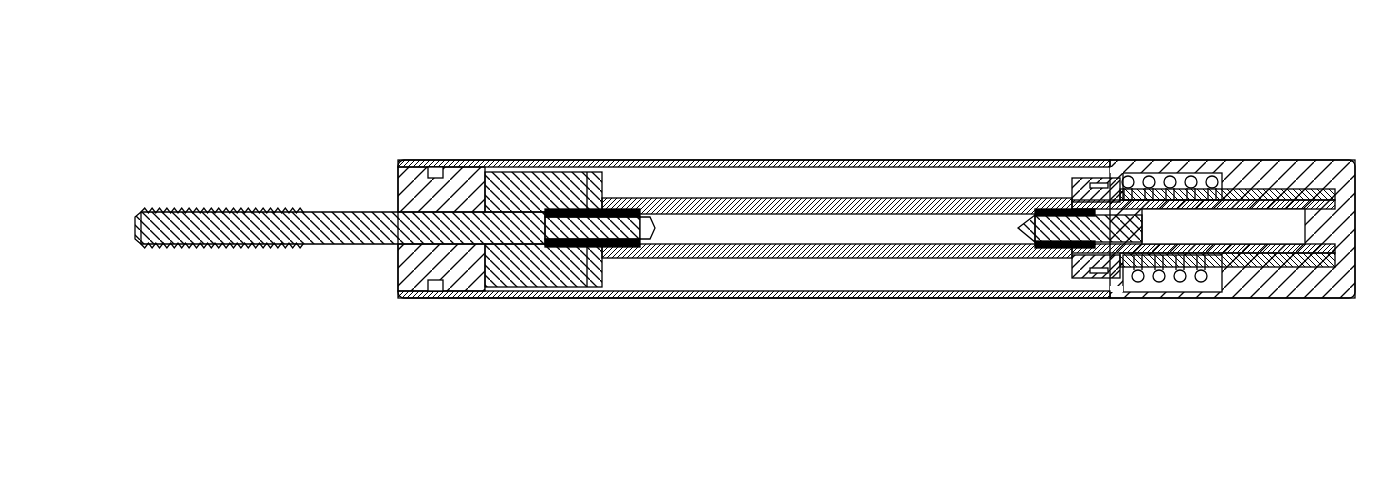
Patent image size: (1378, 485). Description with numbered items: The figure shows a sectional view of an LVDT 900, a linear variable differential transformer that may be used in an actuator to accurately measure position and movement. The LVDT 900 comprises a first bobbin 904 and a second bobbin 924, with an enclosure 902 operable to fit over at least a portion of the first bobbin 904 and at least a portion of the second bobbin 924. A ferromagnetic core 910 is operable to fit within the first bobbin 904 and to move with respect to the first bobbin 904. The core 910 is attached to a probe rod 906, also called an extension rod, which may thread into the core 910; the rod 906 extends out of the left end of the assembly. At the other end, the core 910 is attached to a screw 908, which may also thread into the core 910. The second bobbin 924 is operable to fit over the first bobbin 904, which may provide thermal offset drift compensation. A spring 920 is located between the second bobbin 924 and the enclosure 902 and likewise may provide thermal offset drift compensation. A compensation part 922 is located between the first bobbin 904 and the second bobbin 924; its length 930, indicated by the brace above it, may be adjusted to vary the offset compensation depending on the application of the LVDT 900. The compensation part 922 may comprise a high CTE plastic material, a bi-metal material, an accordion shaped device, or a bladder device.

The LVDT 900 is at (753, 56).
The enclosure 902 is at (876, 214).
The first bobbin 904 is at (398, 284).
The probe rod 906 is at (257, 208).
The screw 908 is at (1053, 240).
The ferromagnetic core 910 is at (808, 230).
The spring 920 is at (1173, 173).
The compensation part 922 is at (546, 272).
The second bobbin 924 is at (748, 159).
The length 930 is at (587, 156).